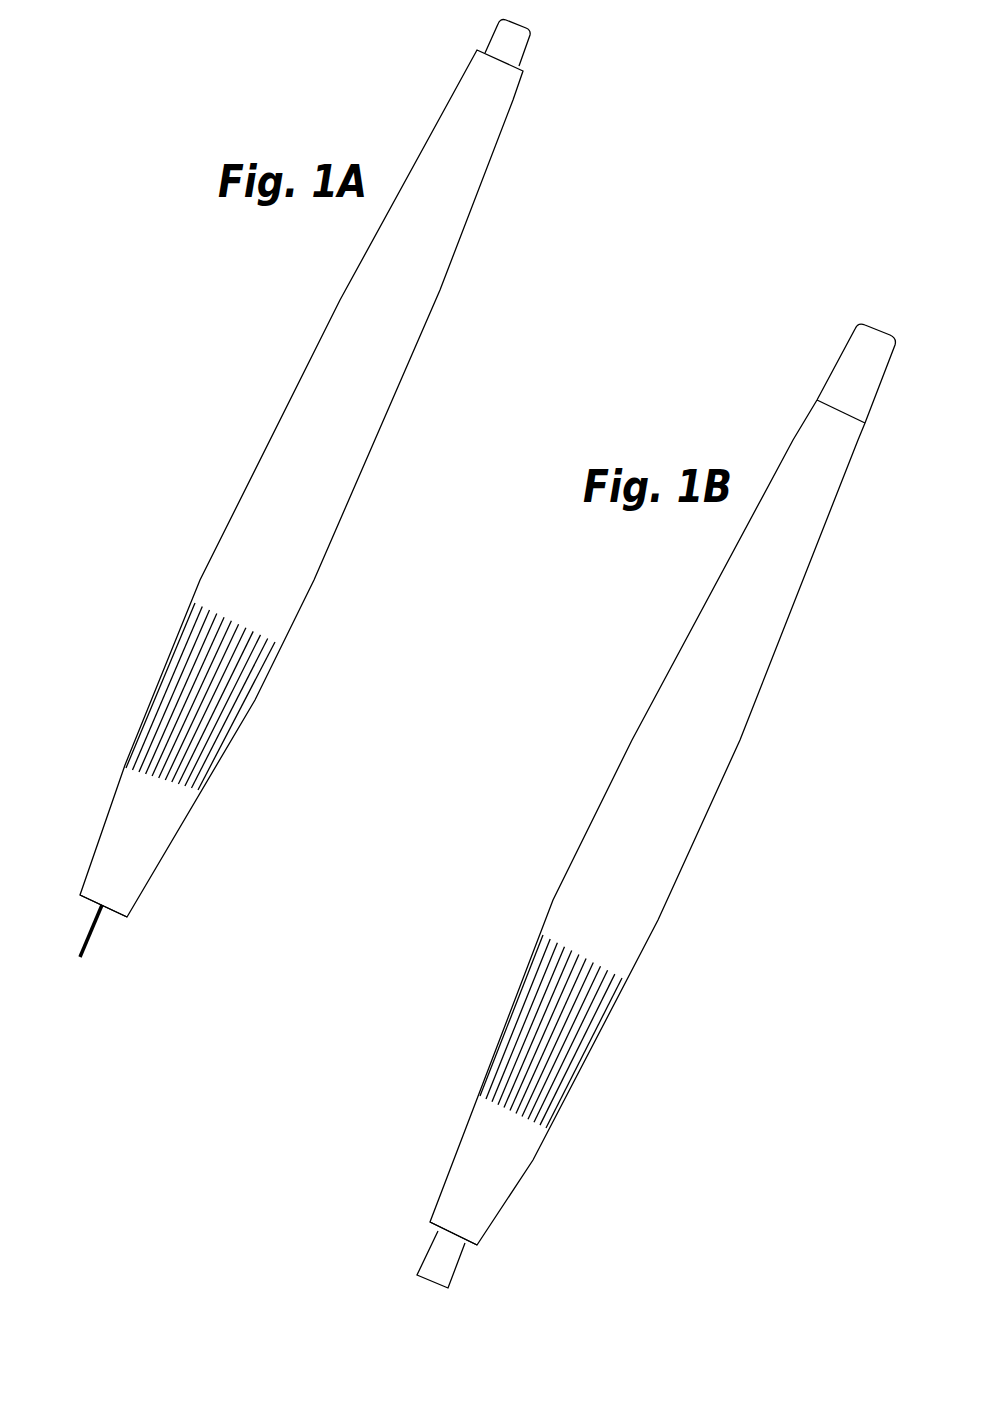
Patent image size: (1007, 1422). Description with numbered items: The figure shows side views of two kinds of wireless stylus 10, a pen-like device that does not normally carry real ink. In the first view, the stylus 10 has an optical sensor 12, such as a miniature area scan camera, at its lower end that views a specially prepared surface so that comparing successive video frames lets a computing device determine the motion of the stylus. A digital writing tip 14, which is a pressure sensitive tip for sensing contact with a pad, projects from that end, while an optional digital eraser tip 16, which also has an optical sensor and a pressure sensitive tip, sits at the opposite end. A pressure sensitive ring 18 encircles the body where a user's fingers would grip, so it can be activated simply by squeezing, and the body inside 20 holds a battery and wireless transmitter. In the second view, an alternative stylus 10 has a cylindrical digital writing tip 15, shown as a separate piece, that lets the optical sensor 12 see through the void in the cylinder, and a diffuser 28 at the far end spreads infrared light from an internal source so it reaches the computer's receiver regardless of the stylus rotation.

In FIG. 1A, the stylus 10 is at (279, 382).
In FIG. 1B, the stylus 10 is at (671, 627).
In FIG. 1A, the optical sensor 12 is at (88, 900).
In FIG. 1B, the optical sensor 12 is at (443, 1235).
In FIG. 1A, the digital writing tip 14 is at (82, 957).
In FIG. 1B, the cylindrical digital writing tip 15 is at (453, 1278).
In FIG. 1A, the digital eraser tip 16 is at (529, 33).
In FIG. 1A, the pressure sensitive ring 18 is at (257, 698).
In FIG. 1B, the pressure sensitive ring 18 is at (527, 963).
In FIG. 1A, the inside 20 is at (425, 280).
In FIG. 1B, the diffuser 28 is at (883, 380).